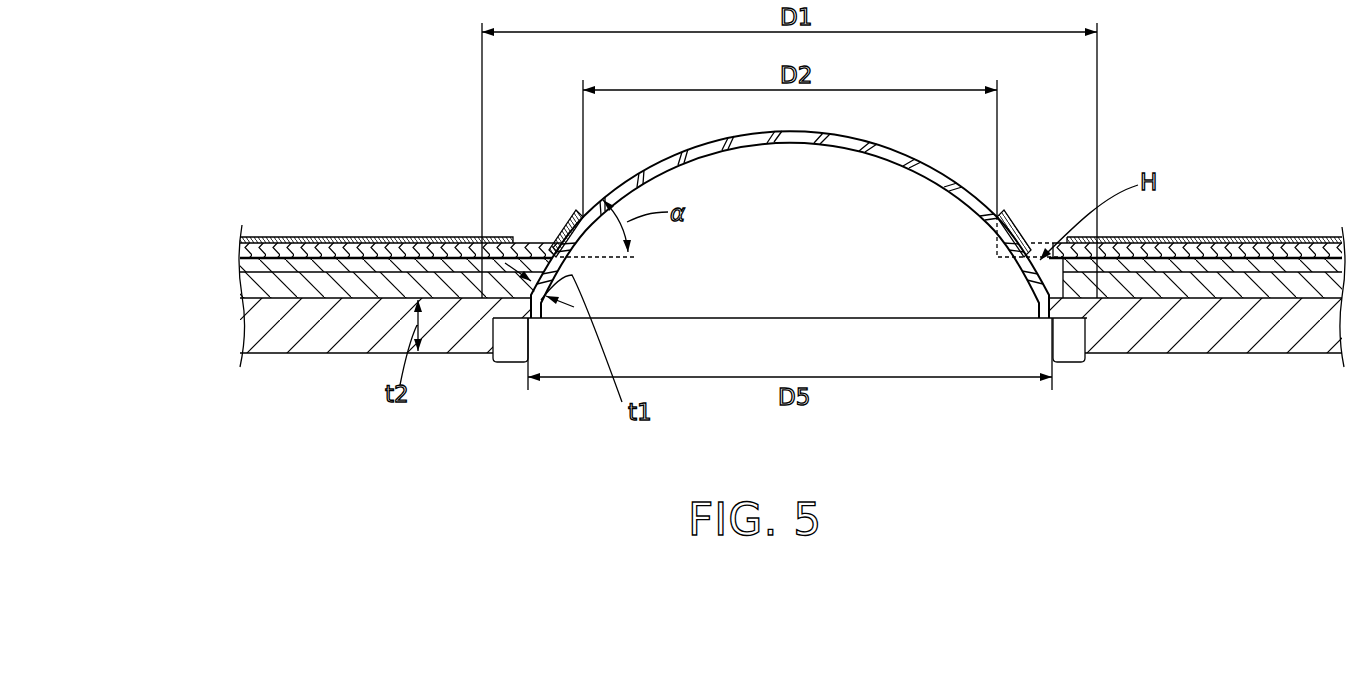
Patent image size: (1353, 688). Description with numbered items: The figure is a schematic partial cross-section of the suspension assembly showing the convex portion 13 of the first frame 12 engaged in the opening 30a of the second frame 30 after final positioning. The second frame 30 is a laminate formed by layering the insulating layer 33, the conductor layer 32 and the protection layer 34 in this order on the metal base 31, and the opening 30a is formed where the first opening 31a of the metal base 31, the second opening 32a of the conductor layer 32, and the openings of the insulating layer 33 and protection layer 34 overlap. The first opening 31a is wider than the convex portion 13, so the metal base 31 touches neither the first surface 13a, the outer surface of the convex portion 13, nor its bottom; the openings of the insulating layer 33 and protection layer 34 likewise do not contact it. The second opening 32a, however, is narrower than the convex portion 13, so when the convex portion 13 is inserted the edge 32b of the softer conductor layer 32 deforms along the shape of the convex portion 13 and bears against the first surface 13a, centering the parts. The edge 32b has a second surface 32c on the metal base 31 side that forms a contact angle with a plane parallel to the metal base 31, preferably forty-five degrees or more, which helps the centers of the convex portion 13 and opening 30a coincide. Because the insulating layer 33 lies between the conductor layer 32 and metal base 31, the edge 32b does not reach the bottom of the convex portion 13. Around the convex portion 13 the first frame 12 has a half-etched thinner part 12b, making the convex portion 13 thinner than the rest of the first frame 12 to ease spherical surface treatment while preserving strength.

The first frame 12 is at (743, 364).
The thinner part 12b is at (512, 364).
The convex portion 13 is at (790, 224).
The first surface 13a is at (959, 177).
The second frame 30 is at (717, 269).
The opening 30a is at (567, 195).
The metal base 31 is at (743, 351).
The first opening 31a is at (1090, 284).
The conductor layer 32 is at (743, 206).
The second opening 32a is at (1006, 207).
The edge 32b is at (1018, 224).
The second surface 32c is at (580, 238).
The insulating layer 33 is at (243, 268).
The protection layer 34 is at (246, 232).